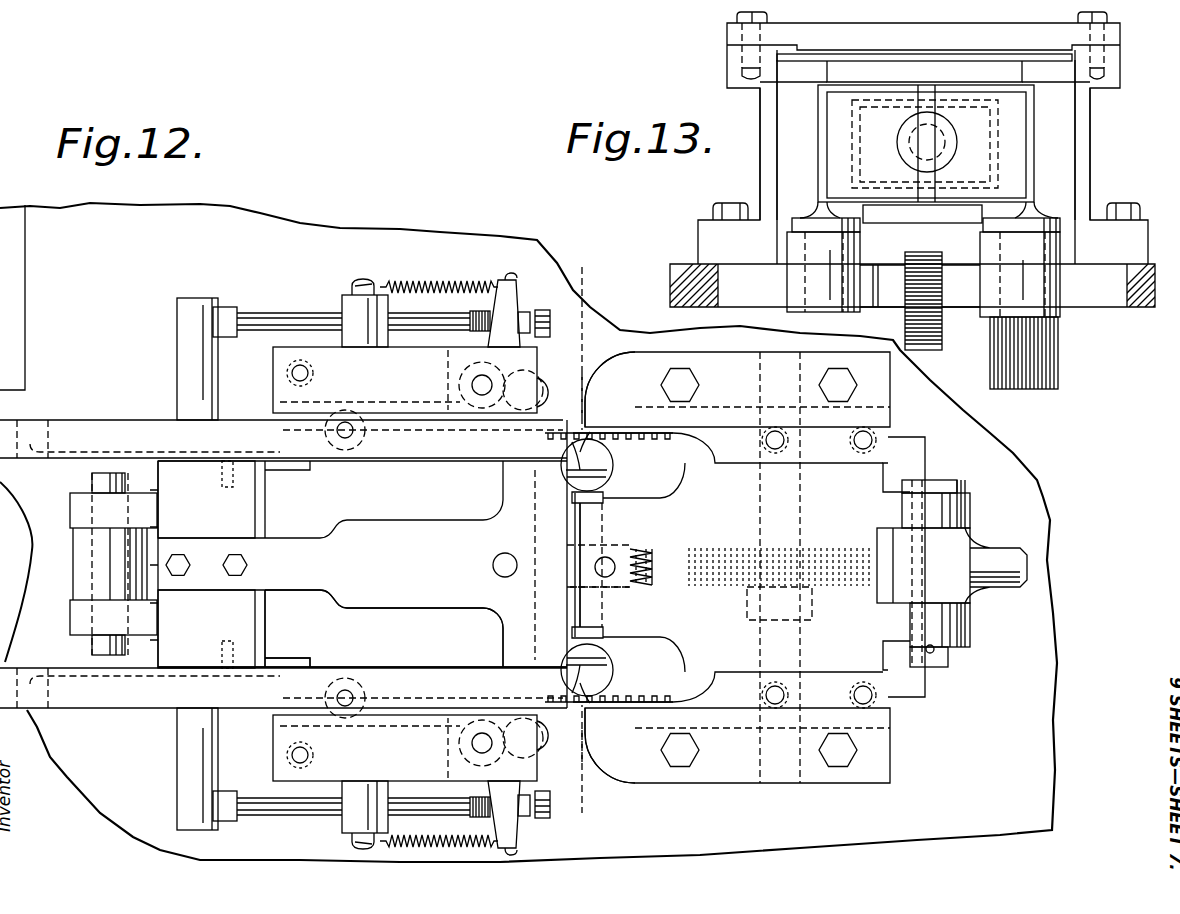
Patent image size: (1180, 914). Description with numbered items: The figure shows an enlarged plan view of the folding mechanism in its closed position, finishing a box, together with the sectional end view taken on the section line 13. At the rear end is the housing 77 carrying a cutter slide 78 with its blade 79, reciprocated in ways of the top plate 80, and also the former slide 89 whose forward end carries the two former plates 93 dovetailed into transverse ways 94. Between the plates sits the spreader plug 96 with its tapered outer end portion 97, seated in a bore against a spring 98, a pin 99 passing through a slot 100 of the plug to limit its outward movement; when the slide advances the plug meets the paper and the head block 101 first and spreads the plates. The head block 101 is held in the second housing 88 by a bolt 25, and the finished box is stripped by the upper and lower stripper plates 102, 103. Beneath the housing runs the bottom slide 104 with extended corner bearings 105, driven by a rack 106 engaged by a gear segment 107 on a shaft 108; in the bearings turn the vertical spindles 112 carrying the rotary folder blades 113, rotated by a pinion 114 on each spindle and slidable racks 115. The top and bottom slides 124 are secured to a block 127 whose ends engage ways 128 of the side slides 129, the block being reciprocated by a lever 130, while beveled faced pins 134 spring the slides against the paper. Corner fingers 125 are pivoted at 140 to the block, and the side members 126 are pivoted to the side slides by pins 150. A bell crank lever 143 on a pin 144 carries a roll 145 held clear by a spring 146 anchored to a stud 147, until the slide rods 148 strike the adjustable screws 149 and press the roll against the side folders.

In FIG. 12, the section line 13 is at (613, 267).
In FIG. 12, the bolt 25 is at (135, 297).
In FIG. 12, the housing 77 is at (737, 567).
In FIG. 13, the housing 77 is at (1082, 145).
In FIG. 13, the cutter slide 78 is at (915, 165).
In FIG. 13, the blade 79 is at (903, 54).
In FIG. 13, the top plate 80 is at (725, 63).
In FIG. 12, the second housing 88 is at (410, 380).
In FIG. 12, the former slide 89 is at (755, 567).
In FIG. 12, the former plates 93 is at (562, 592).
In FIG. 13, the former plates 93 is at (926, 145).
In FIG. 12, the transverse ways 94 is at (602, 555).
In FIG. 13, the transverse ways 94 is at (988, 103).
In FIG. 12, the spreader plug 96 is at (617, 587).
In FIG. 12, the tapered outer end portion 97 is at (545, 573).
In FIG. 13, the tapered outer end portion 97 is at (927, 143).
In FIG. 12, the spring 98 is at (657, 553).
In FIG. 12, the pin 99 is at (600, 548).
In FIG. 12, the slot 100 is at (655, 552).
In FIG. 12, the head block 101 is at (362, 628).
In FIG. 13, the upper stripper plate 102 is at (924, 71).
In FIG. 13, the lower stripper plate 103 is at (922, 213).
In FIG. 12, the bottom slide 104 is at (915, 459).
In FIG. 13, the bottom slide 104 is at (920, 268).
In FIG. 12, the corner bearings 105 is at (618, 464).
In FIG. 13, the corner bearings 105 is at (800, 263).
In FIG. 12, the rack 106 is at (812, 552).
In FIG. 12, the gear segment 107 is at (745, 581).
In FIG. 13, the gear segment 107 is at (936, 329).
In FIG. 12, the shaft 108 is at (781, 650).
In FIG. 12, the vertical spindles 112 is at (628, 675).
In FIG. 13, the vertical spindles 112 is at (808, 212).
In FIG. 12, the blade 113 is at (553, 446).
In FIG. 13, the blade 113 is at (813, 177).
In FIG. 13, the pinion 114 is at (1045, 357).
In FIG. 12, the racks 115 is at (590, 433).
In FIG. 12, the top and bottom slides 124 is at (269, 564).
In FIG. 12, the corner fingers 125 is at (445, 510).
In FIG. 12, the side members 126 is at (410, 748).
In FIG. 12, the block 127 is at (206, 499).
In FIG. 12, the ways 128 is at (80, 428).
In FIG. 12, the side slides 129 is at (84, 462).
In FIG. 12, the lever 130 is at (82, 563).
In FIG. 12, the beveled faced pins 134 is at (500, 563).
In FIG. 12, the pivot 140 is at (220, 467).
In FIG. 12, the bell crank lever 143 is at (511, 300).
In FIG. 12, the pin 144 is at (472, 385).
In FIG. 12, the roll 145 is at (541, 377).
In FIG. 12, the spring 146 is at (442, 281).
In FIG. 12, the stud 147 is at (346, 295).
In FIG. 12, the slide rods 148 is at (262, 309).
In FIG. 12, the adjustable screws 149 is at (553, 317).
In FIG. 12, the pins 150 is at (346, 440).